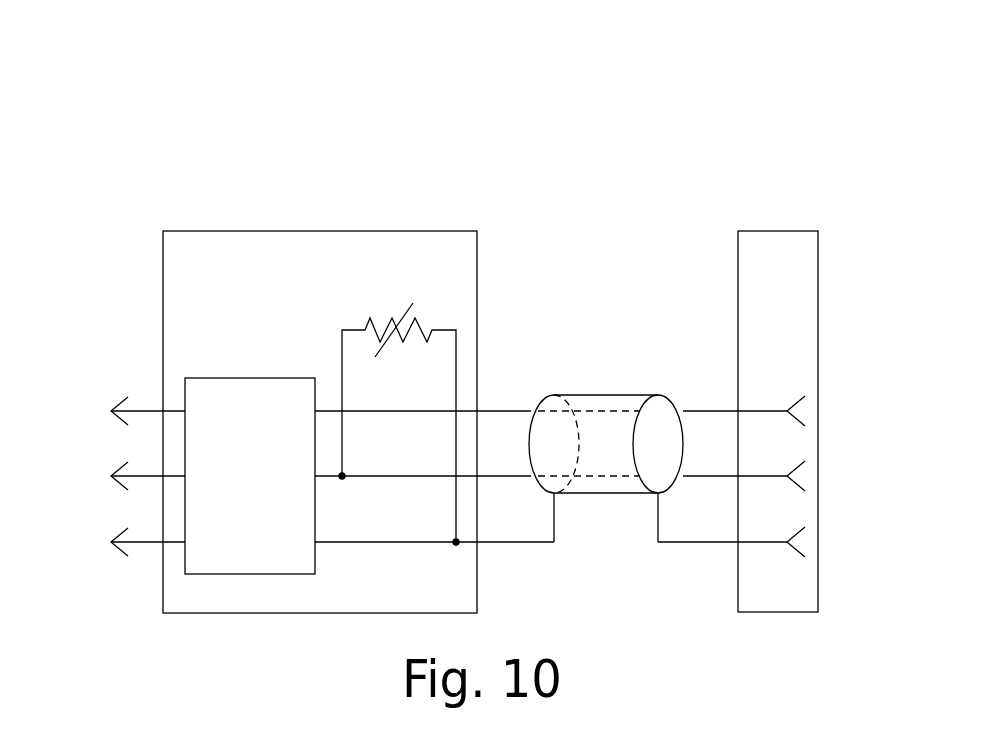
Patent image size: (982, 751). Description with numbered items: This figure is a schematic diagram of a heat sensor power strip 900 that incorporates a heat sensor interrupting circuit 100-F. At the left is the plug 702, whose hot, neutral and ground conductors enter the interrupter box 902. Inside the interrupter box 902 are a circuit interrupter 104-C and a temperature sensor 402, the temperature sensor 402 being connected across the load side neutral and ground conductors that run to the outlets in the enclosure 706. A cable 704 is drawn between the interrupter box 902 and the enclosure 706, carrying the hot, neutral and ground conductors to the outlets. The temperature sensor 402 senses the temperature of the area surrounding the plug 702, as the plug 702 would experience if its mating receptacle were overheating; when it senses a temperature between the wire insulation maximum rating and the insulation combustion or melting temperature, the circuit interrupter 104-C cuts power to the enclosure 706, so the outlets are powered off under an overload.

The heat sensor power strip 900 is at (789, 88).
The heat sensor interrupting circuit 100-F is at (141, 160).
The interrupter box 902 is at (405, 231).
The circuit interrupter 104-C is at (245, 378).
The temperature sensor 402 is at (377, 320).
The plug 702 is at (114, 355).
The cable / cord 704 is at (612, 395).
The enclosure 706 is at (783, 231).